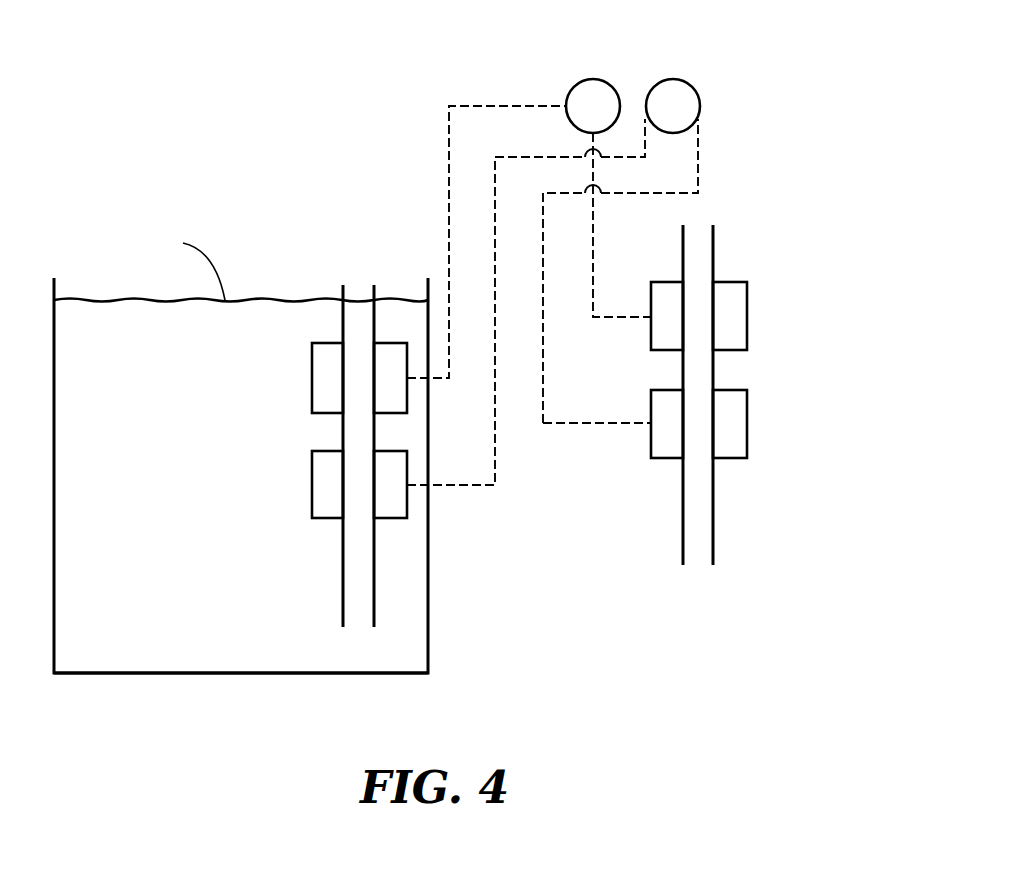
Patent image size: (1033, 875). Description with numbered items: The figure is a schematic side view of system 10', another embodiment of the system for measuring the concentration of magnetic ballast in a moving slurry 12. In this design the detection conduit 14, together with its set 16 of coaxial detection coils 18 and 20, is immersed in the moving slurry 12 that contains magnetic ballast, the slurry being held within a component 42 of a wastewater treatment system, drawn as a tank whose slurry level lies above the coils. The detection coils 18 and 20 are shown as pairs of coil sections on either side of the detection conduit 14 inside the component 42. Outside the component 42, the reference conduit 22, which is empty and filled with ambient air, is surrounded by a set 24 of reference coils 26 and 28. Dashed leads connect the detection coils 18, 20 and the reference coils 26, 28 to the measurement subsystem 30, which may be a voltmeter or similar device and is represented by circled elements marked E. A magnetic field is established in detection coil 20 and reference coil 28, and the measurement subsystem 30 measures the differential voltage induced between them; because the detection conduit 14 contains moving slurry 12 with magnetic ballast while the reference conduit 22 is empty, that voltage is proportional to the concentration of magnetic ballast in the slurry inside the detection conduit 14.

The system 10' is at (300, 77).
The moving slurry 12 is at (90, 358).
The detection conduit 14 is at (375, 588).
The set of detection coils 16 is at (306, 432).
The detection coil 18 is at (318, 351).
The detection coil 20 is at (325, 519).
The reference conduit 22 is at (713, 553).
The set of reference coils 24 is at (762, 370).
The reference coil 26 is at (747, 282).
The reference coil 28 is at (747, 458).
The measurement subsystem 30 is at (686, 84).
The component of a wastewater treatment system 42 is at (100, 675).